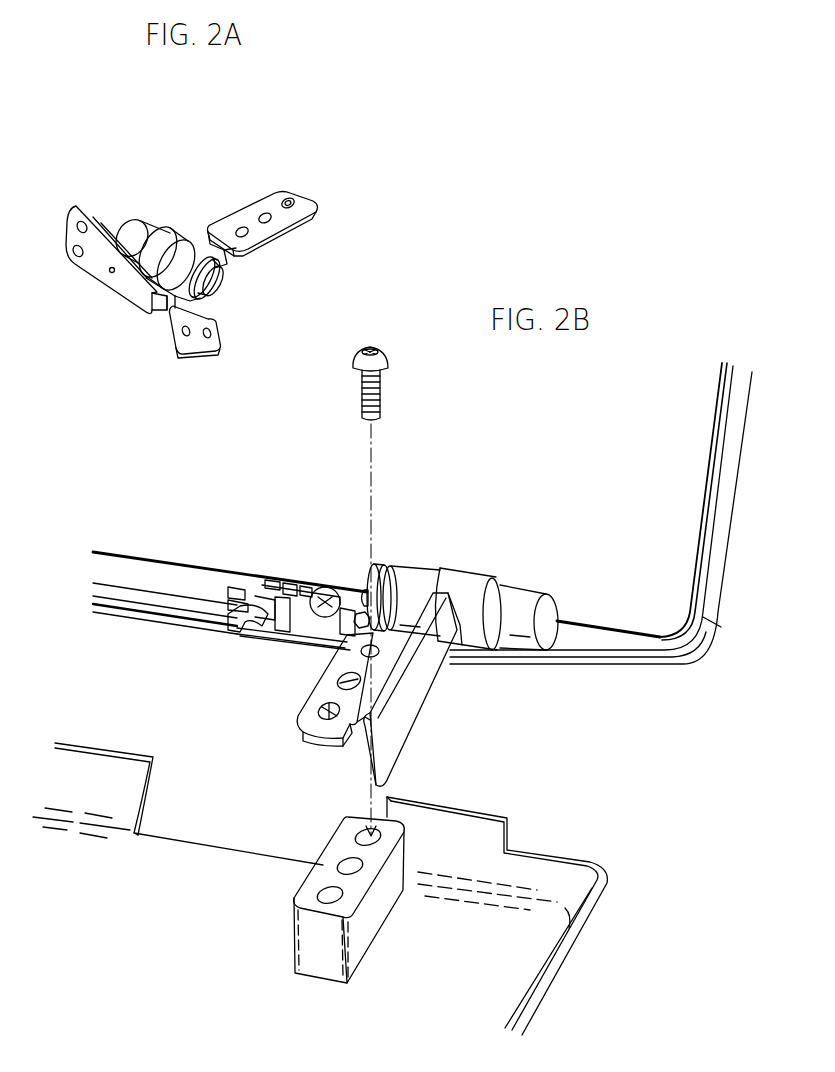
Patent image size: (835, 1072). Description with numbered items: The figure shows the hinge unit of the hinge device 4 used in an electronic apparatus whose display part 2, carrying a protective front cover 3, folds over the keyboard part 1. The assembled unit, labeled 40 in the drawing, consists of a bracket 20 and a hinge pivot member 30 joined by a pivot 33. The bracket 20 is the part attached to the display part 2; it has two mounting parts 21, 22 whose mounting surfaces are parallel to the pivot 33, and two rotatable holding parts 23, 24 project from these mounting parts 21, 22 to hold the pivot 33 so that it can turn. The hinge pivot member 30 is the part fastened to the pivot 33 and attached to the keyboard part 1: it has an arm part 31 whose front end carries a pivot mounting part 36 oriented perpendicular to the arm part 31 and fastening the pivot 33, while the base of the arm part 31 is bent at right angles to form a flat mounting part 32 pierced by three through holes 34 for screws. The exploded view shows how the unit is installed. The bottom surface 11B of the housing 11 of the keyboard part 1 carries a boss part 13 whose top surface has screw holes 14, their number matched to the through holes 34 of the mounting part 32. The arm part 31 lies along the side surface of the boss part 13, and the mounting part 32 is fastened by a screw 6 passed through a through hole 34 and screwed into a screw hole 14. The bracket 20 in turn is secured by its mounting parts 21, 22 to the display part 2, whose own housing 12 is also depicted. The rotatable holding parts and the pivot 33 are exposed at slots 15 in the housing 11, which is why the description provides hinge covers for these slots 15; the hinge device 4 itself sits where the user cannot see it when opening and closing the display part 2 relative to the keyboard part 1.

In FIG. 2B, the keyboard part 1 is at (650, 1010).
In FIG. 2B, the display part 2 is at (620, 428).
In FIG. 2B, the front cover 3 is at (627, 597).
In FIG. 2B, the hinge device 4 is at (677, 789).
In FIG. 2B, the screw 6 is at (385, 390).
In FIG. 2B, the housing 11 is at (590, 923).
In FIG. 2B, the bottom surface 11B is at (165, 868).
In FIG. 2B, the housing 12 is at (527, 663).
In FIG. 2B, the boss part 13 is at (372, 917).
In FIG. 2B, the screw holes 14 is at (318, 885).
In FIG. 2B, the slots 15 is at (262, 817).
In FIG. 2A, the bracket 20 is at (115, 338).
In FIG. 2B, the bracket 20 is at (318, 540).
In FIG. 2A, the mounting part 21 is at (97, 258).
In FIG. 2A, the mounting part 22 is at (196, 333).
In FIG. 2A, the rotatable holding part 23 is at (200, 243).
In FIG. 2B, the rotatable holding part 23 is at (423, 568).
In FIG. 2A, the rotatable holding part 24 is at (195, 303).
In FIG. 2B, the rotatable holding part 24 is at (377, 566).
In FIG. 2A, the hinge pivot member 30 is at (343, 174).
In FIG. 2B, the hinge pivot member 30 is at (535, 751).
In FIG. 2A, the arm part 31 is at (228, 257).
In FIG. 2B, the arm part 31 is at (410, 713).
In FIG. 2A, the mounting part 32 is at (285, 218).
In FIG. 2B, the mounting part 32 is at (330, 682).
In FIG. 2A, the pivot 33 is at (127, 230).
In FIG. 2B, the pivot 33 is at (418, 583).
In FIG. 2A, the through holes 34 is at (290, 201).
In FIG. 2B, the through holes 34 is at (327, 708).
In FIG. 2A, the pivot mounting part 36 is at (161, 238).
In FIG. 2B, the pivot mounting part 36 is at (483, 578).
In FIG. 2A, the hinge cover 40 is at (226, 142).